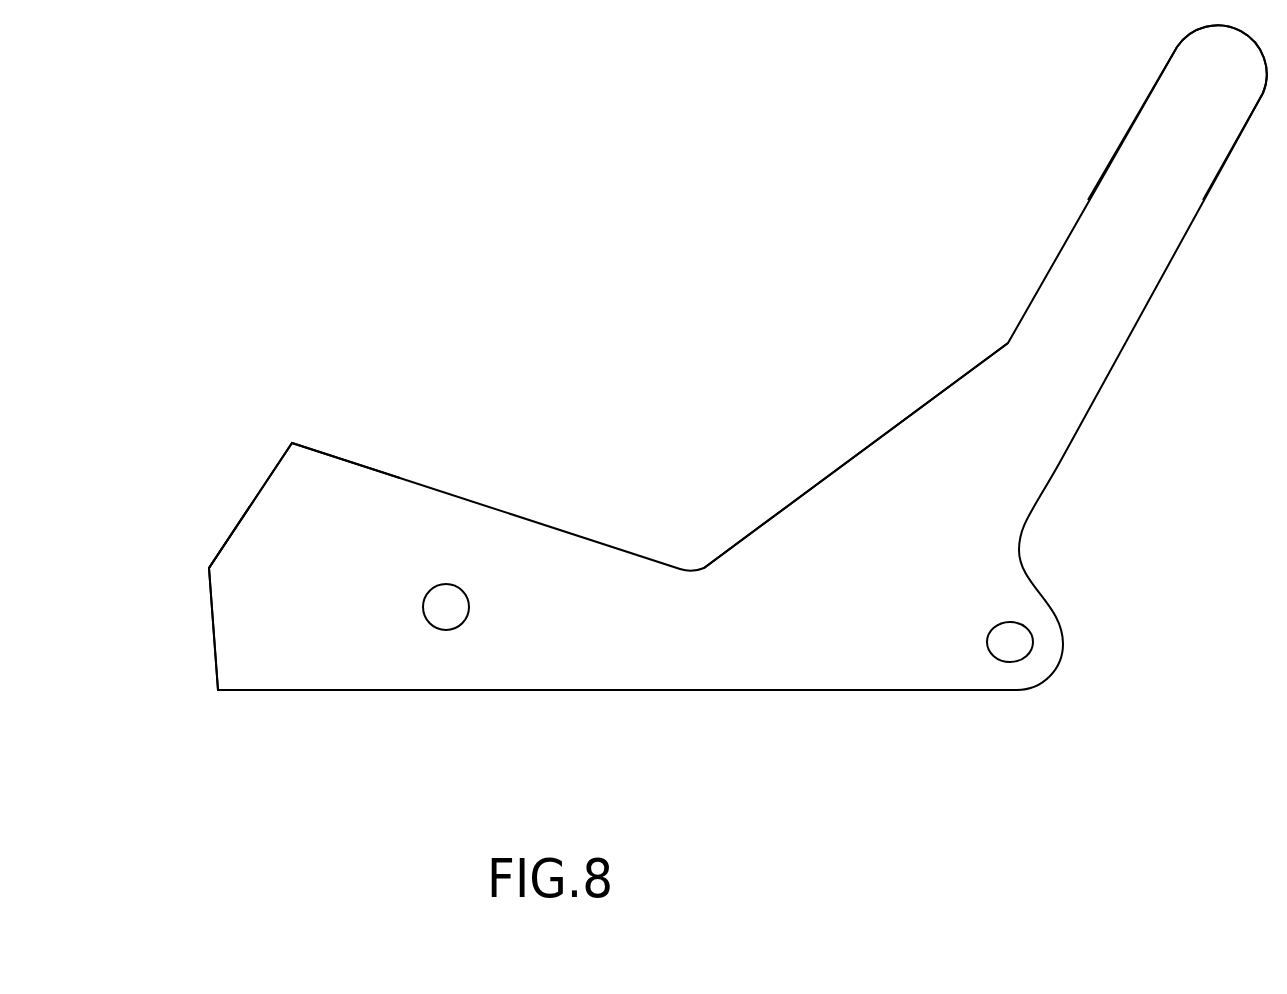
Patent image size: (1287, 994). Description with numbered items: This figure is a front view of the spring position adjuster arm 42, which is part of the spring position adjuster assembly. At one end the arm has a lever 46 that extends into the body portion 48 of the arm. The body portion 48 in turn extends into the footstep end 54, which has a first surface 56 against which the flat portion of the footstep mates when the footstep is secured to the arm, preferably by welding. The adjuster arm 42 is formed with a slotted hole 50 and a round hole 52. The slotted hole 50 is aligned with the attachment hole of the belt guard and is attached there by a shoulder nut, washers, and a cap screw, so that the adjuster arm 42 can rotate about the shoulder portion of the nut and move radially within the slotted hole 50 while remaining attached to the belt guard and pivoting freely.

The spring position adjuster arm 42 is at (650, 258).
The lever 46 is at (1200, 80).
The body portion 48 is at (903, 475).
The slotted hole 50 is at (1025, 640).
The round hole 52 is at (442, 610).
The footstep end 54 is at (277, 463).
The first surface 56 is at (228, 540).